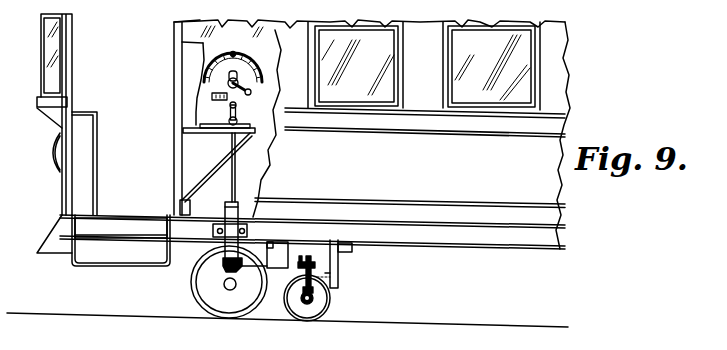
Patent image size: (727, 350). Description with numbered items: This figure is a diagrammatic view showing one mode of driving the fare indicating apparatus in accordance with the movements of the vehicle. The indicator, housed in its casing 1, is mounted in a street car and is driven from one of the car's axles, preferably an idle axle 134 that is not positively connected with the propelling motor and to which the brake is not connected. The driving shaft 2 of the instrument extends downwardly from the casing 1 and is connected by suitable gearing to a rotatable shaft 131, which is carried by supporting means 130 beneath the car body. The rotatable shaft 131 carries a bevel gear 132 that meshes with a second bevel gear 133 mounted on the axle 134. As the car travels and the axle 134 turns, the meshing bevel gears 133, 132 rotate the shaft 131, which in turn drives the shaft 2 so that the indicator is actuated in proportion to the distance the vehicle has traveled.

The casing 1 is at (196, 115).
The driving shaft 2 is at (237, 178).
The supporting means 130 is at (328, 267).
The rotatable shaft 131 is at (316, 277).
The bevel gear 132 is at (300, 300).
The bevel gear 133 is at (311, 305).
The axle 134 is at (314, 298).